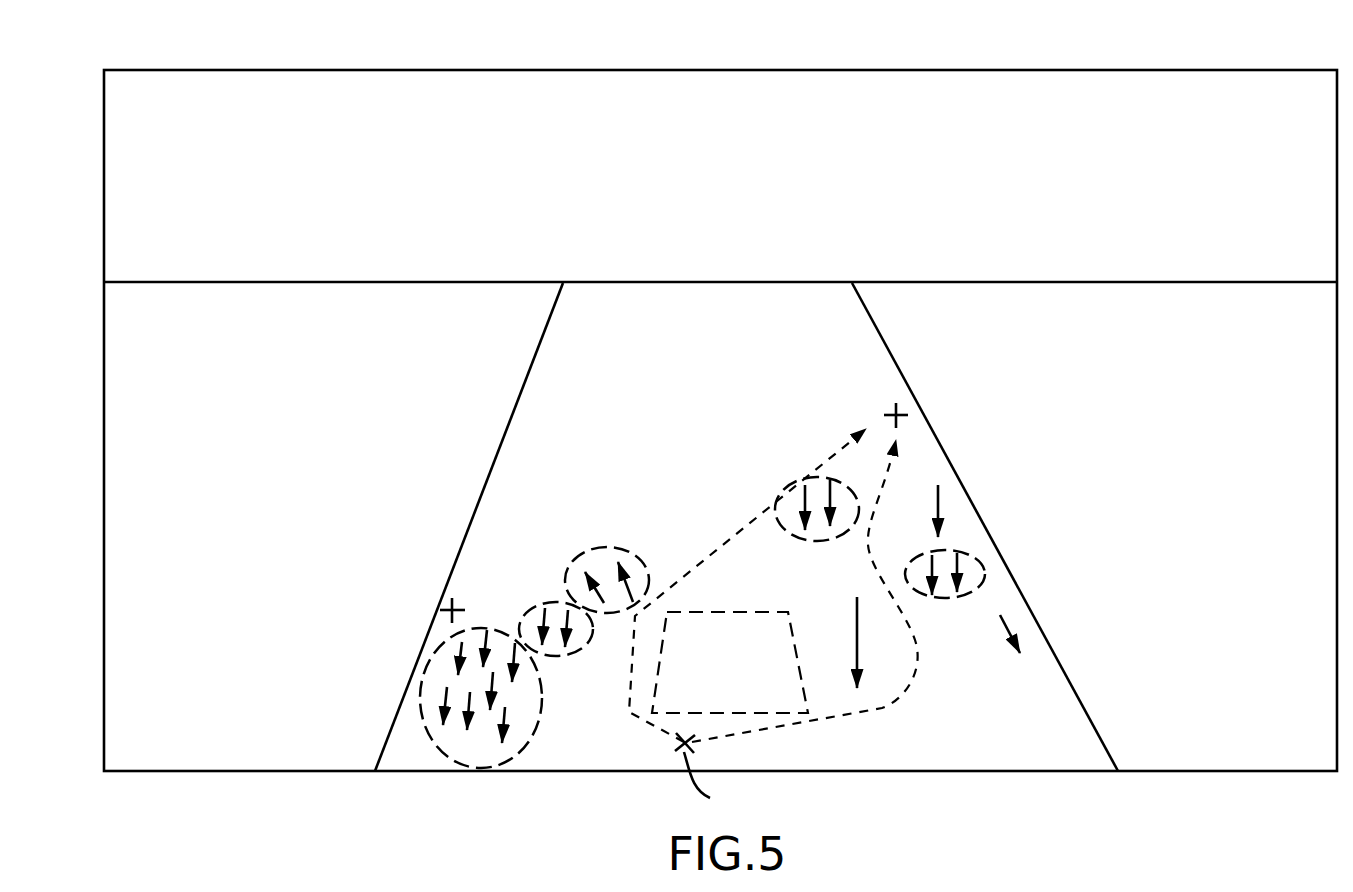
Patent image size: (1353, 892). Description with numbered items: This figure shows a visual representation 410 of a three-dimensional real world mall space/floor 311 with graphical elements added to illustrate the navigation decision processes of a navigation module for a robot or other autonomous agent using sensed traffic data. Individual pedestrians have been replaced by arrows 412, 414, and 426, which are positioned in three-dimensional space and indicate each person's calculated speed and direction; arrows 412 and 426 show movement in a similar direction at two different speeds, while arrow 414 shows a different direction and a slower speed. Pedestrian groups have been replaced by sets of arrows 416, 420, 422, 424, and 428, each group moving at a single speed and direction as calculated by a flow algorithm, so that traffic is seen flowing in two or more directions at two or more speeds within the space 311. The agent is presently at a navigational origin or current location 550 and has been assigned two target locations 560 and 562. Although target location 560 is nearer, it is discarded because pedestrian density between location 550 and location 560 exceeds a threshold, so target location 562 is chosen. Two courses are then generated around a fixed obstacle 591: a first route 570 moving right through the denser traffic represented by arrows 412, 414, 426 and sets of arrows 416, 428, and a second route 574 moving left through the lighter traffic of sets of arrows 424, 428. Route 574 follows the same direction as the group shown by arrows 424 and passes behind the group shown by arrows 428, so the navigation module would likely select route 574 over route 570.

The visual representation 410 is at (180, 68).
The mall space/floor 311 is at (1048, 758).
The target location 560 is at (447, 602).
The target location 562 is at (890, 410).
The set of arrows 420 is at (420, 695).
The set of arrows 422 is at (588, 652).
The set of arrows 424 is at (636, 552).
The set of arrows 428 is at (790, 538).
The arrow 426 is at (938, 500).
The set of arrows 416 is at (985, 567).
The arrow 414 is at (1010, 620).
The arrow 412 is at (857, 657).
The fixed obstacle 591 is at (728, 701).
The second route 574 is at (755, 510).
The first route 570 is at (882, 708).
The navigational origin or current location 550 is at (676, 744).